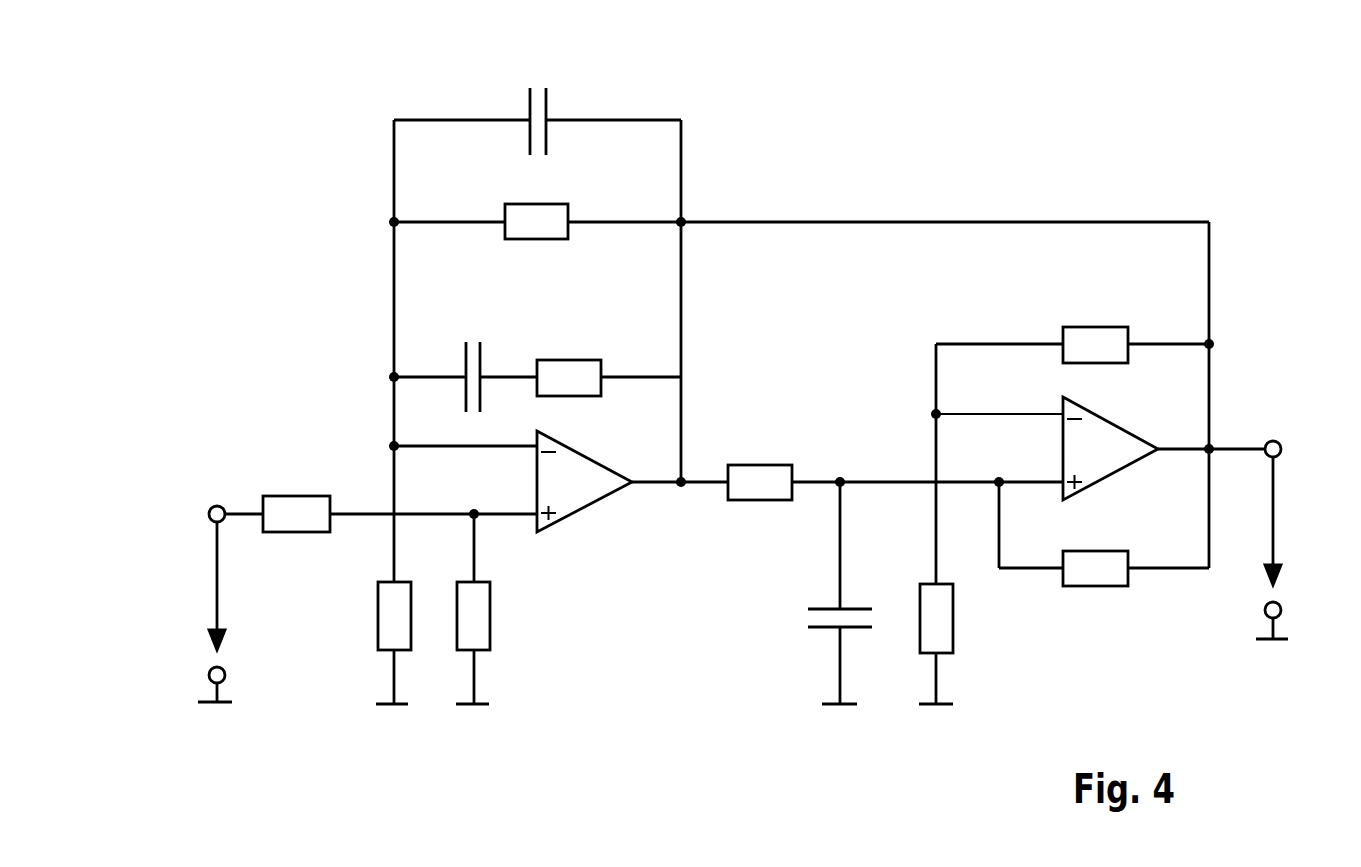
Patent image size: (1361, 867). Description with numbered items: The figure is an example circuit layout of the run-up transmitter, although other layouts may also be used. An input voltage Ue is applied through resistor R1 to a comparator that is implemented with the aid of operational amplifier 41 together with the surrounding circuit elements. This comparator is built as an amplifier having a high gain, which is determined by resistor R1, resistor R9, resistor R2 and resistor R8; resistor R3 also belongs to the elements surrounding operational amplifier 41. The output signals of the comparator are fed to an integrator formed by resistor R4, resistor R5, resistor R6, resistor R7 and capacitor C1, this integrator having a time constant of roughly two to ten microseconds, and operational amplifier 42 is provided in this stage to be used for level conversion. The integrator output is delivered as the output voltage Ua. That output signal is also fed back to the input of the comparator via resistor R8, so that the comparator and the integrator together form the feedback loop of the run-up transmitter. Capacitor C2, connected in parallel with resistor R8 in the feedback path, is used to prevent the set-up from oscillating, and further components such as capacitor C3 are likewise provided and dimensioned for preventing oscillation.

The operational amplifier 41 is at (584, 481).
The operational amplifier 42 is at (1047, 448).
The resistor R1 is at (296, 486).
The resistor R2 is at (502, 643).
The resistor R3 is at (569, 341).
The resistor R4 is at (760, 453).
The resistor R5 is at (1098, 603).
The resistor R6 is at (1095, 315).
The resistor R7 is at (966, 644).
The resistor R8 is at (530, 192).
The resistor R9 is at (366, 643).
The capacitor C1 is at (825, 641).
The capacitor C2 is at (555, 96).
The capacitor C3 is at (485, 349).
The input voltage Ue is at (192, 612).
The output voltage Ua is at (1298, 548).